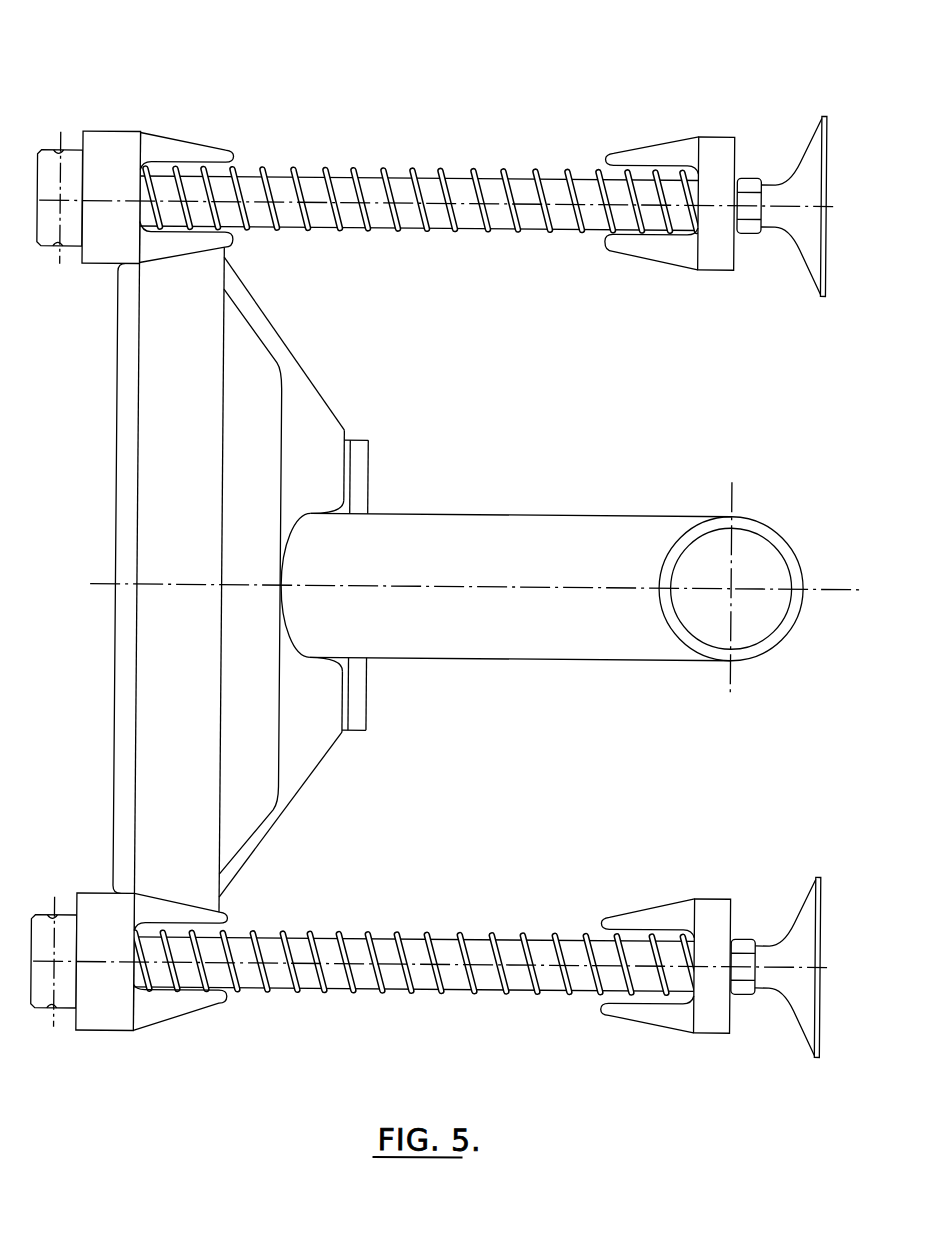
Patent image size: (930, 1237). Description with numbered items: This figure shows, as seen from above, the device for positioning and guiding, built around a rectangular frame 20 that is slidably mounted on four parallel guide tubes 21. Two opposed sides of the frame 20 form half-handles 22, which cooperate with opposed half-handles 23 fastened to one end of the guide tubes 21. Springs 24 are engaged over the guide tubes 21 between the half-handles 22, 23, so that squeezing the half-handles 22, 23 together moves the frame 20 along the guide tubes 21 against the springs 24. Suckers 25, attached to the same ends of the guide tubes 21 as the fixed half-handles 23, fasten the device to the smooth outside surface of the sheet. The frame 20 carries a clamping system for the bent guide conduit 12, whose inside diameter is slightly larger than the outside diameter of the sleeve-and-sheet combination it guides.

The bent guide conduit 12 is at (559, 511).
The rectangular frame 20 is at (114, 426).
The guide tube 21 is at (339, 174).
The half-handle 22 is at (170, 141).
The half-handle 23 is at (628, 146).
The spring 24 is at (439, 172).
The sucker 25 is at (792, 259).